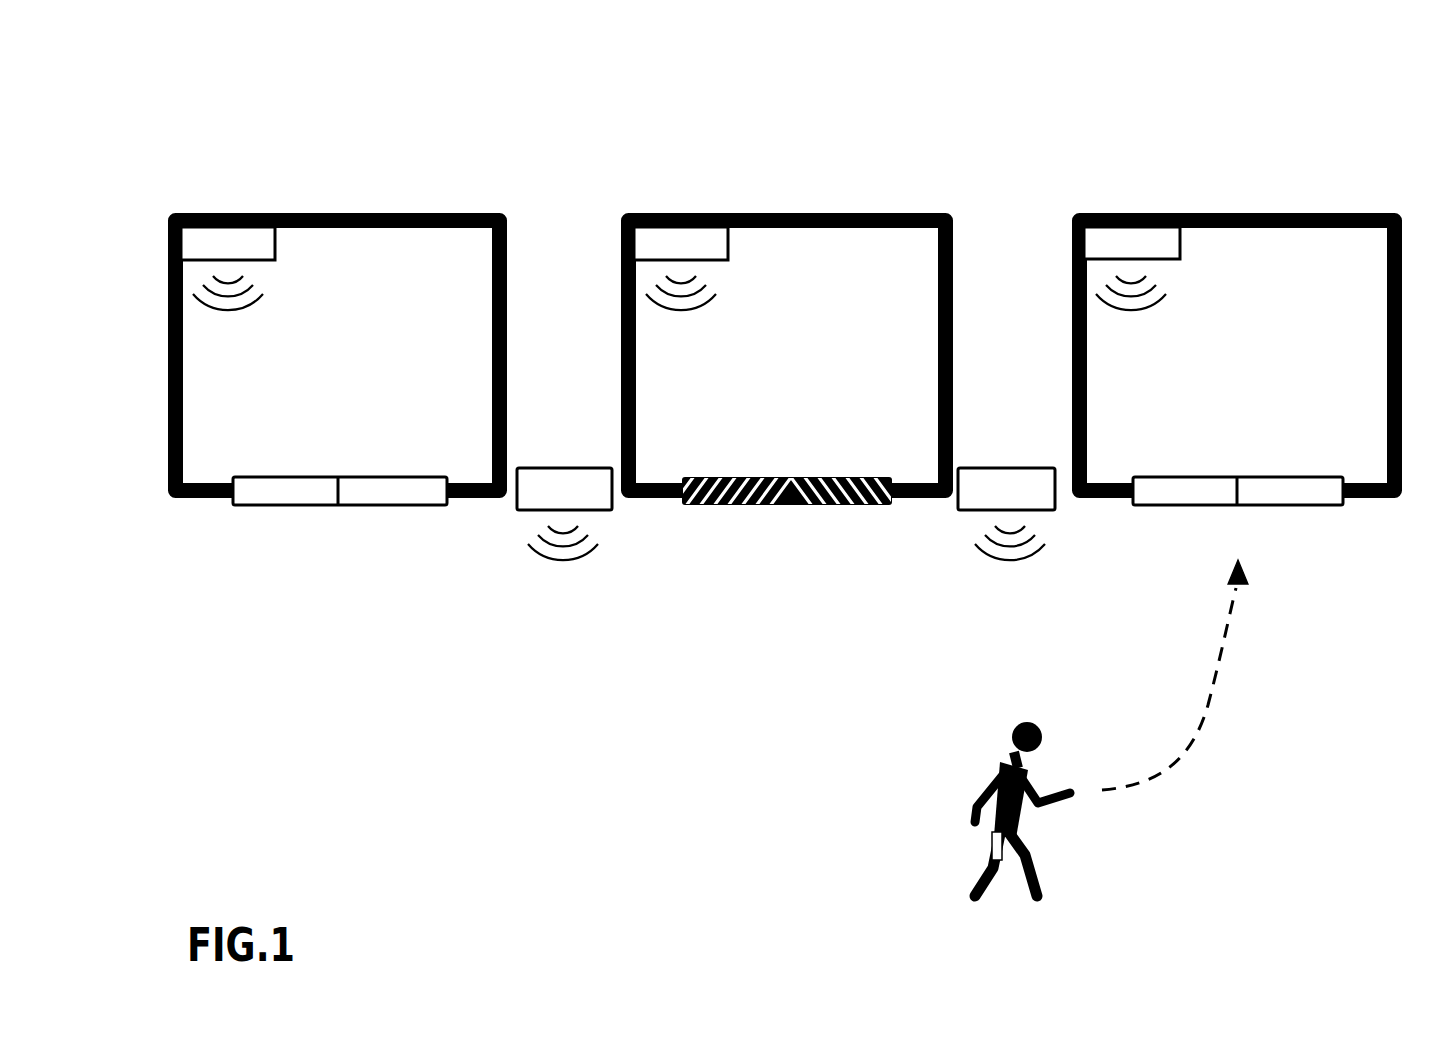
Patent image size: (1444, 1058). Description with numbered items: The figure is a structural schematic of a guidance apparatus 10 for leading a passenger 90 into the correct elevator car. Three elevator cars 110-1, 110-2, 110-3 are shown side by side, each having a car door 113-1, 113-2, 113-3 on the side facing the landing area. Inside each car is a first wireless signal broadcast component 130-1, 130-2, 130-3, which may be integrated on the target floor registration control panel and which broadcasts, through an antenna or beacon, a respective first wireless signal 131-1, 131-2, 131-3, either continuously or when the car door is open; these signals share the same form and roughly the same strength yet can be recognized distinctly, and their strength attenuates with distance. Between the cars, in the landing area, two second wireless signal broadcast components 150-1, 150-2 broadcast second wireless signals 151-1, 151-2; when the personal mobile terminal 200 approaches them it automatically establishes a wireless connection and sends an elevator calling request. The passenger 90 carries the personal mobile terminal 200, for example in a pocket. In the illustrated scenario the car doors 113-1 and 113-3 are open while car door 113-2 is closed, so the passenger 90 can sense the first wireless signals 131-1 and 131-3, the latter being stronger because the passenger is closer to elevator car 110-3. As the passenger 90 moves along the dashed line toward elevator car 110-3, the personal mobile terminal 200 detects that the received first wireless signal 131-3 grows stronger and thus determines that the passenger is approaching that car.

The guidance apparatus 10 is at (349, 134).
The elevator car 110-1 is at (447, 213).
The elevator car 110-2 is at (888, 213).
The elevator car 110-3 is at (1338, 213).
The car door 113-1 is at (377, 483).
The car door 113-2 is at (809, 478).
The car door 113-3 is at (1282, 478).
The first wireless signal broadcast component 130-1 is at (275, 250).
The first wireless signal broadcast component 130-2 is at (728, 250).
The first wireless signal broadcast component 130-3 is at (1180, 247).
The first wireless signal 131-1 is at (258, 300).
The first wireless signal 131-2 is at (708, 300).
The first wireless signal 131-3 is at (1168, 298).
The second wireless signal broadcast component 150-1 is at (560, 468).
The second wireless signal broadcast component 150-2 is at (1011, 468).
The second wireless signal 151-1 is at (585, 558).
The second wireless signal 151-2 is at (1032, 557).
The passenger 90 is at (992, 774).
The personal mobile terminal 200 is at (991, 846).